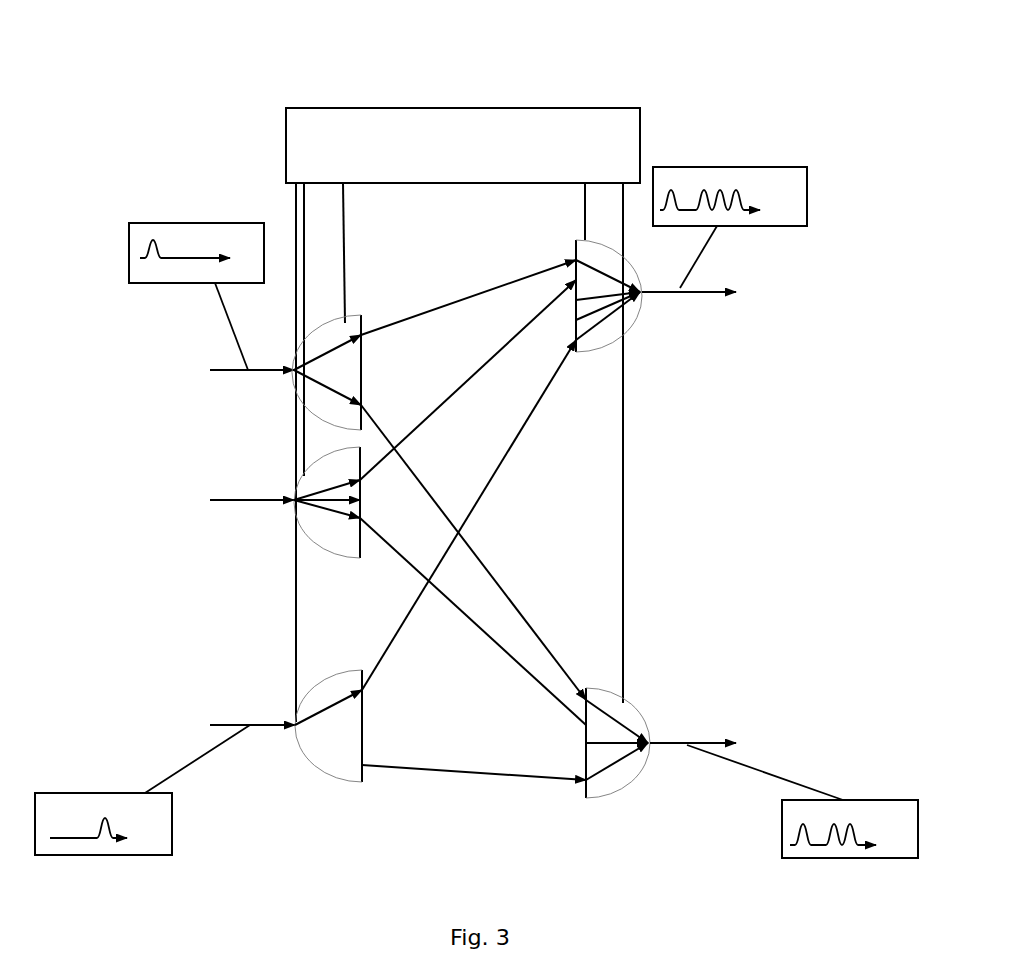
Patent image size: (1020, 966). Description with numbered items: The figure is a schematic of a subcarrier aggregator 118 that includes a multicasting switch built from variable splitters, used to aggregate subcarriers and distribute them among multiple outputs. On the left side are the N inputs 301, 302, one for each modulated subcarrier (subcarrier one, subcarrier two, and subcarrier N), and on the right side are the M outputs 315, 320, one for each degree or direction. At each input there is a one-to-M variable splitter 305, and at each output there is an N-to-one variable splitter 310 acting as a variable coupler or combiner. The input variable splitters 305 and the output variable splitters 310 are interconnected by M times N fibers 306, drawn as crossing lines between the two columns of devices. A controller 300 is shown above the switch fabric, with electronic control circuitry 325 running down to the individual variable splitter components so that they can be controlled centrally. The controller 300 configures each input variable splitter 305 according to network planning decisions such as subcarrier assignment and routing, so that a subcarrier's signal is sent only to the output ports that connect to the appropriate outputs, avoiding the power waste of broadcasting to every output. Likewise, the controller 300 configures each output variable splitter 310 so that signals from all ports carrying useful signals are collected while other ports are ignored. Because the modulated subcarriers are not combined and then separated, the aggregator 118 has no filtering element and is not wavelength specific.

The subcarrier aggregator 118 is at (228, 84).
The controller 300 is at (463, 145).
The input 301 is at (193, 222).
The input 302 is at (117, 858).
The 1:M variable splitter 305 is at (362, 315).
The fibers 306 is at (473, 522).
The N:1 variable splitter 310 is at (628, 318).
The output 315 is at (730, 227).
The output 320 is at (802, 803).
The electronic control circuitry 325 is at (305, 197).